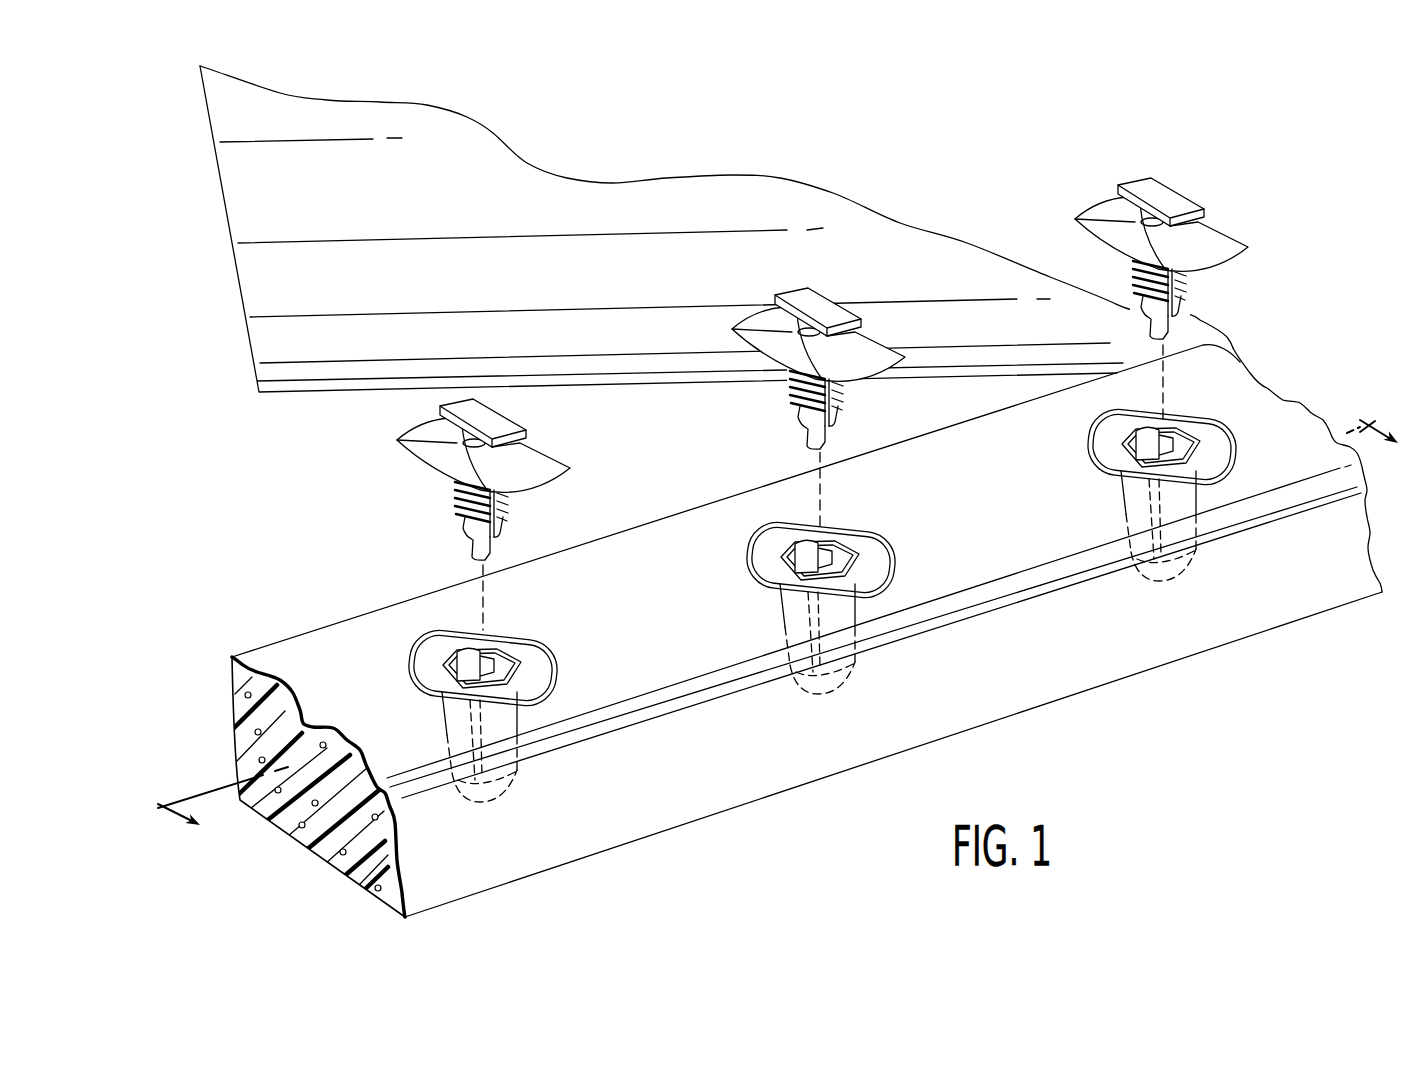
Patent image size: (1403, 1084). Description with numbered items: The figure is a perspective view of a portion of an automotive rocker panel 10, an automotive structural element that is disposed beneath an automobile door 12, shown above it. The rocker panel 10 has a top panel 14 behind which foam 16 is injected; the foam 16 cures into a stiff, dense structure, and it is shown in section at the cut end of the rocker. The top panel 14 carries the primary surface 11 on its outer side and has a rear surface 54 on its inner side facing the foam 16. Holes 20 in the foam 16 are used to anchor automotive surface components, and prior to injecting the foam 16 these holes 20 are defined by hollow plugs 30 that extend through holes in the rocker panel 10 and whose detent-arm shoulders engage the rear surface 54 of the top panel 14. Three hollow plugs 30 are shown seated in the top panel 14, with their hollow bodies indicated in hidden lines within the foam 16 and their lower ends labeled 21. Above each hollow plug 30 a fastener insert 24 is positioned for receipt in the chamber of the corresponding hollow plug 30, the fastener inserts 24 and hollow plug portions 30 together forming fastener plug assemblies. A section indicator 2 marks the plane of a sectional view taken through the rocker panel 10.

The rocker panel 10 is at (750, 637).
The primary surface 11 is at (232, 670).
The automobile door 12 is at (402, 205).
The top panel 14 is at (613, 615).
The foam 16 is at (352, 838).
The holes 20 is at (448, 742).
The grommet legs 21 is at (520, 760).
The fastener insert 24 is at (392, 434).
The hollow plug 30 is at (405, 655).
The rear surface 54 is at (247, 718).
The section line 2- 2 is at (767, 608).